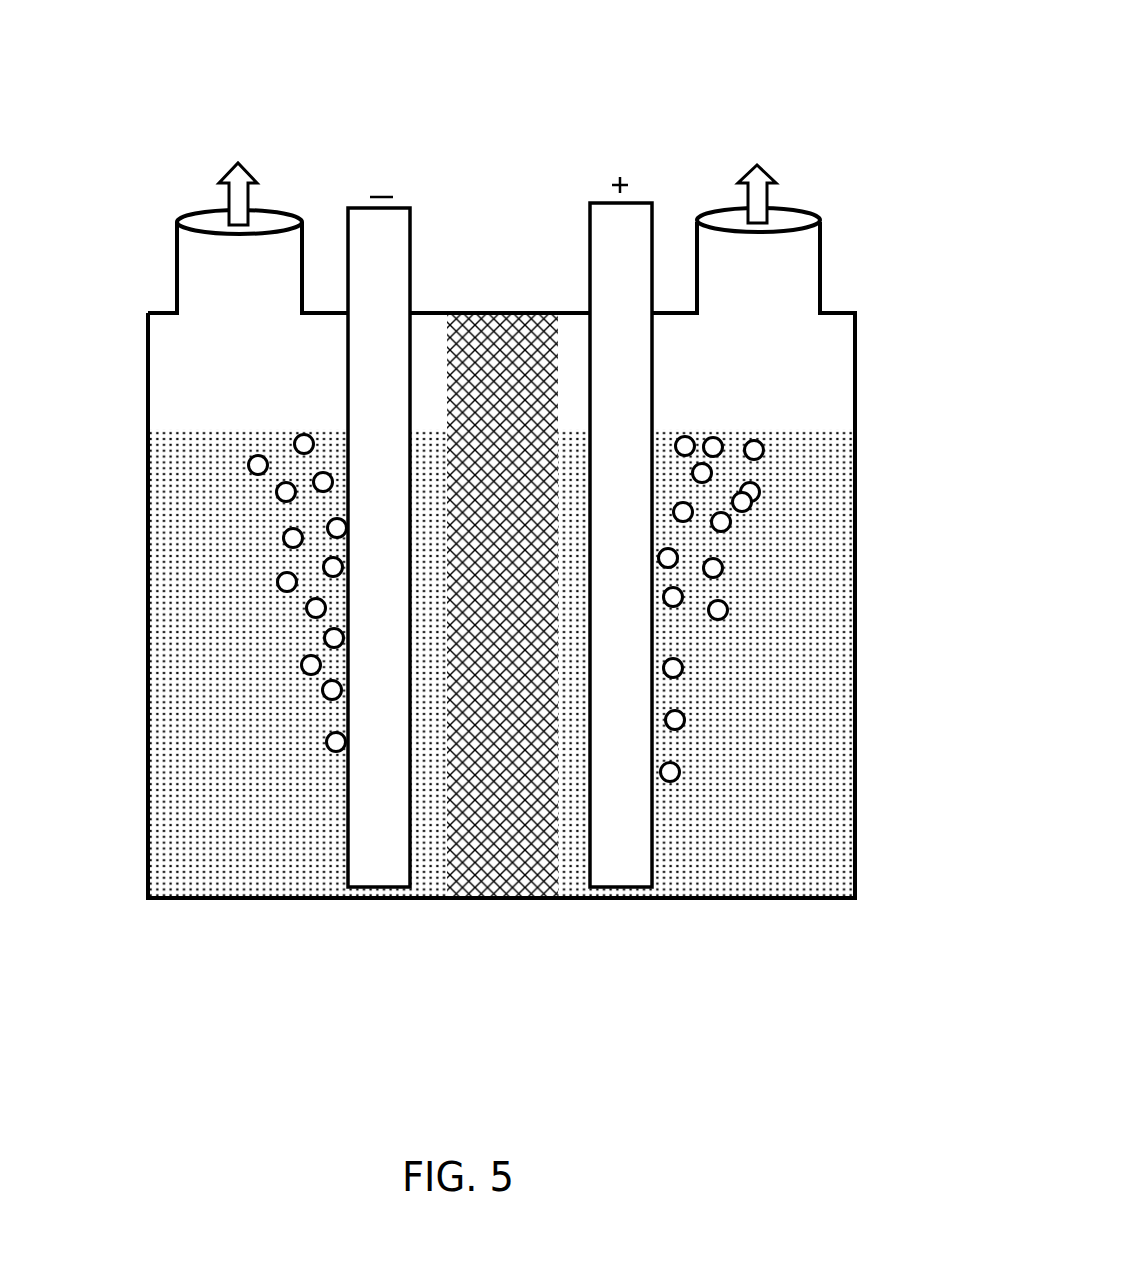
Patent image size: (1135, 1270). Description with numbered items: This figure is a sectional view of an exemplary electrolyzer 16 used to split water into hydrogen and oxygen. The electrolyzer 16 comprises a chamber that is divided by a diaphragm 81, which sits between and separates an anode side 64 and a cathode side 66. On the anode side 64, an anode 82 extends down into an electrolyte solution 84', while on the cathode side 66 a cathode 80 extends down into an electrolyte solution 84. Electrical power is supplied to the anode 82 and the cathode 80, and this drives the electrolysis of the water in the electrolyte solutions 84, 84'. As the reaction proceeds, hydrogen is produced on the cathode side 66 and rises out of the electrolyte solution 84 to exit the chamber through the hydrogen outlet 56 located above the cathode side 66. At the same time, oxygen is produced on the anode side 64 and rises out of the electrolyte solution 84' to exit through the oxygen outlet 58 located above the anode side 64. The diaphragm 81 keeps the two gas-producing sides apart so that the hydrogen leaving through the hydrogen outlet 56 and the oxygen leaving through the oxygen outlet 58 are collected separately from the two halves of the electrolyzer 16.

The electrolyzer 16 is at (732, 140).
The hydrogen outlet 56 is at (200, 223).
The oxygen outlet 58 is at (783, 228).
The anode side 64 is at (838, 663).
The cathode side 66 is at (187, 685).
The cathode 80 is at (398, 222).
The diaphragm 81 is at (527, 333).
The anode 82 is at (636, 217).
The electrolyte solution 84 is at (266, 640).
The electrolyte solution 84' is at (736, 649).